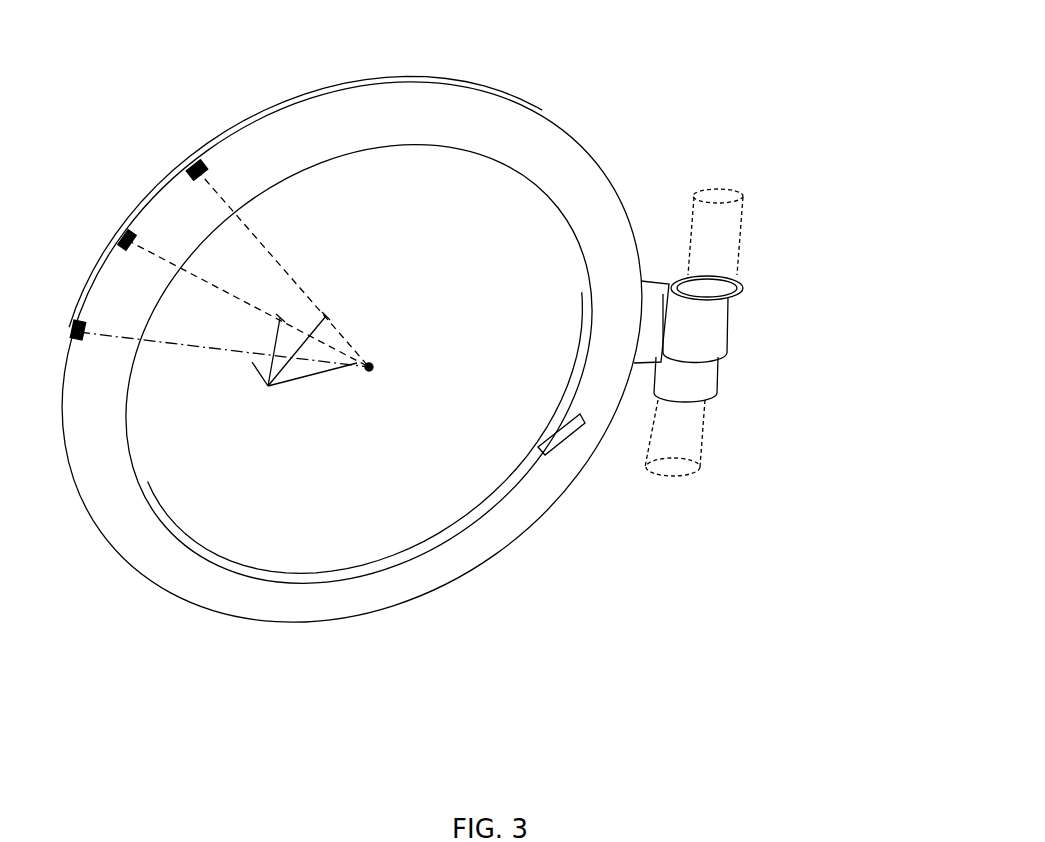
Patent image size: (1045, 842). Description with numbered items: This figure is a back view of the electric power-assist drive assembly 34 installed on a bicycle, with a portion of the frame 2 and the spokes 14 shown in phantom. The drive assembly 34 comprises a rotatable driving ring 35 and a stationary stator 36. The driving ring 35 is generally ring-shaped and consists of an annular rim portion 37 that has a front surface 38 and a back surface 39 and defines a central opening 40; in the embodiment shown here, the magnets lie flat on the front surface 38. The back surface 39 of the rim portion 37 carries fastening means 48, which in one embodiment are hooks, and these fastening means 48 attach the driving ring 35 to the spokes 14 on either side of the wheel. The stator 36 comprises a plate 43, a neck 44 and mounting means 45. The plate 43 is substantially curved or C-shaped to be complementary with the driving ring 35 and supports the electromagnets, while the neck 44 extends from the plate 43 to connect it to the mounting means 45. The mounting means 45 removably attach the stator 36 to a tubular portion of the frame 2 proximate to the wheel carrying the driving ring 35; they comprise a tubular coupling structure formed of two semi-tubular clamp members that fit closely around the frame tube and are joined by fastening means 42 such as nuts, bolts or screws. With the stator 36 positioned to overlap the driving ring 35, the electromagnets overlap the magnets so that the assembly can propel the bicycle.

The frame 2 is at (733, 228).
The spokes 14 is at (303, 366).
The electric power-assist drive assembly 34 is at (756, 63).
The driving ring 35 is at (402, 68).
The stator 36 is at (852, 218).
The annular rim portion 37 is at (538, 112).
The front surface 38 is at (474, 526).
The back surface 39 is at (313, 148).
The central opening 40 is at (492, 328).
The fastening means 42 is at (725, 322).
The plate 43 is at (588, 338).
The neck 44 is at (657, 306).
The mounting means 45 is at (725, 353).
The fastening means 48 is at (74, 322).